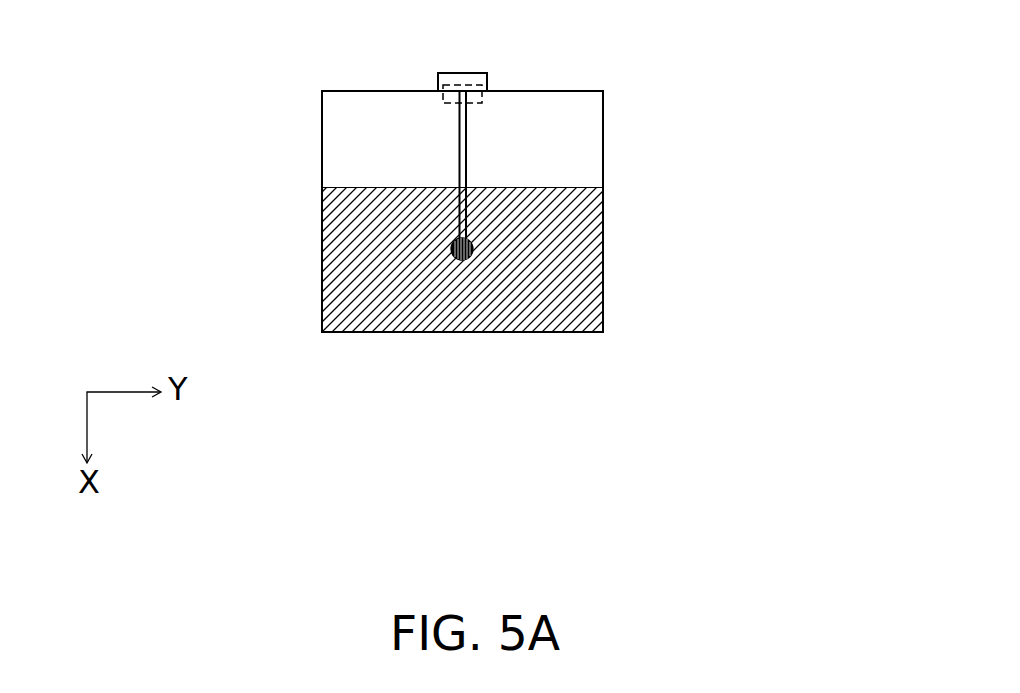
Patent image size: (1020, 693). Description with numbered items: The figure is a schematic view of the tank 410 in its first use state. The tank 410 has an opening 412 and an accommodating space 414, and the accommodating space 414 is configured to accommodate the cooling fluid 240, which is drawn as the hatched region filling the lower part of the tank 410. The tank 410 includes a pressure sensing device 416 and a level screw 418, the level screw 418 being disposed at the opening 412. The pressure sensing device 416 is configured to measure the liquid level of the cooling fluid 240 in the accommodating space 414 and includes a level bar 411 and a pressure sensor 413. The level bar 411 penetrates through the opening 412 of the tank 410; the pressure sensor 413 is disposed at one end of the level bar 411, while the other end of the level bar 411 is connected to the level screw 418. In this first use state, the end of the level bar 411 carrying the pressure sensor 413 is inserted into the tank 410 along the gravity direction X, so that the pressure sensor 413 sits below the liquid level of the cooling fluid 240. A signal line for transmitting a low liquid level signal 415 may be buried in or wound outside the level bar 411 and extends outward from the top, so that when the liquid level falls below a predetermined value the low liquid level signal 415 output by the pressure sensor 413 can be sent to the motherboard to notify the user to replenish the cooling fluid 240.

The tank 410 is at (743, 465).
The cooling fluid 240 is at (345, 278).
The accommodating space 414 is at (363, 135).
The level screw 418 is at (487, 80).
The low liquid level signal 415 is at (462, 73).
The opening 412 is at (482, 103).
The pressure sensing device 416 is at (621, 186).
The level bar 411 is at (466, 205).
The pressure sensor 413 is at (472, 254).